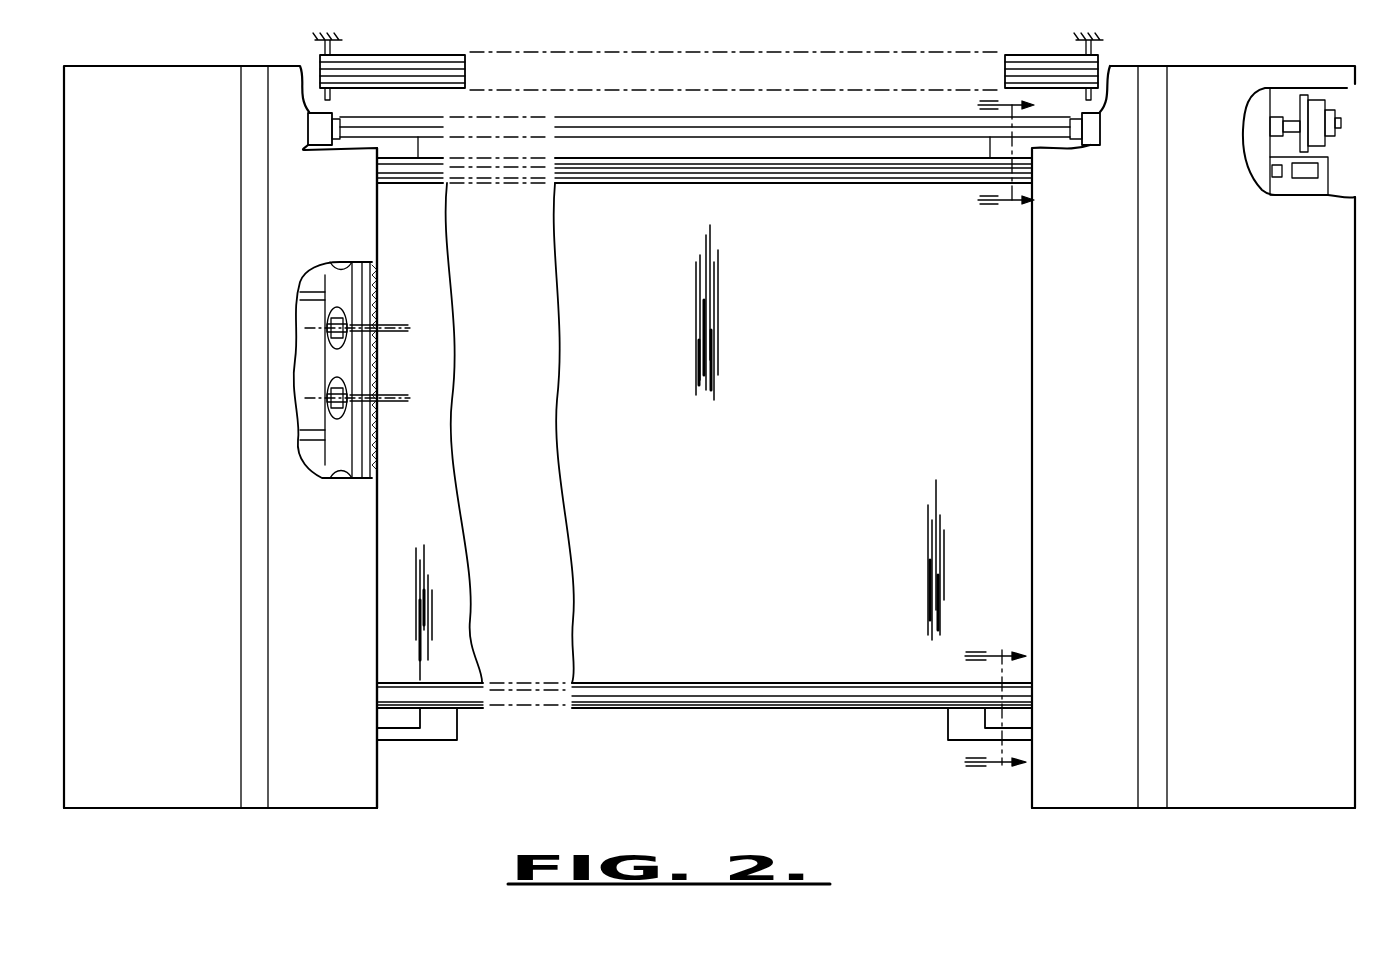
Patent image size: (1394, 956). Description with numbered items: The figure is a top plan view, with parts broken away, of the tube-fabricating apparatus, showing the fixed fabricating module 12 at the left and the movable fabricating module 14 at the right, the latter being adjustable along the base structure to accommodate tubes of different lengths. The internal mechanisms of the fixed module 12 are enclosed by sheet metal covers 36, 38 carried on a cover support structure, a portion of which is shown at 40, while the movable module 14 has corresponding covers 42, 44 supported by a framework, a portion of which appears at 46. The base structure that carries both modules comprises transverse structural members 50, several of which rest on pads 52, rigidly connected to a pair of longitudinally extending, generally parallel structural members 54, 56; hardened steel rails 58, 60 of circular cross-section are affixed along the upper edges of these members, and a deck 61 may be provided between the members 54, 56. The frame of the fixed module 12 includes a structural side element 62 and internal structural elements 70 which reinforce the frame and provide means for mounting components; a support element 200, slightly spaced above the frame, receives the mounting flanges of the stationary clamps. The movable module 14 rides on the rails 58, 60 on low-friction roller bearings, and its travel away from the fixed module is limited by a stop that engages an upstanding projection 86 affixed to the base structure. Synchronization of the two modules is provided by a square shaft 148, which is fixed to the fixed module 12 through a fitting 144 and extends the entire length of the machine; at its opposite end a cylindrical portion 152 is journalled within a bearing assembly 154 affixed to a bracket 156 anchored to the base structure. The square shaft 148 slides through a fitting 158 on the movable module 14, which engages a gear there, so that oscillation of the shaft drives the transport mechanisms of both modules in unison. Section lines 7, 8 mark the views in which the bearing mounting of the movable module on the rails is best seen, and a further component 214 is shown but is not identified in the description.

The fixed fabricating module 12 is at (385, 552).
The movable fabricating module 14 is at (1028, 428).
The sheet metal cover 36 is at (168, 477).
The sheet metal cover 38 is at (336, 580).
The cover support structure 40 is at (252, 808).
The cover 42 is at (1280, 479).
The cover 44 is at (1103, 473).
The framework 46 is at (1157, 808).
The transverse structural members 50 is at (412, 728).
The pads 52 is at (415, 150).
The longitudinally extending structural member 54 is at (835, 710).
The longitudinally extending structural member 56 is at (765, 184).
The rail 58 is at (755, 686).
The rail 60 is at (840, 184).
The deck 61 is at (730, 455).
The structural side element 62 is at (362, 305).
The internal structural elements 70 is at (312, 295).
The upstanding projection 86 is at (1305, 178).
The fitting 144 is at (318, 150).
The square shaft 148 is at (820, 118).
The cylindrical portion 152 is at (1286, 124).
The bearing assembly 154 is at (1328, 116).
The bracket 156 is at (1304, 102).
The fitting 158 is at (1092, 148).
The support element 200 is at (350, 357).
The telescoping slide 214 is at (432, 72).
The section line 7- 7 is at (1020, 166).
The section line 8- 8 is at (995, 705).